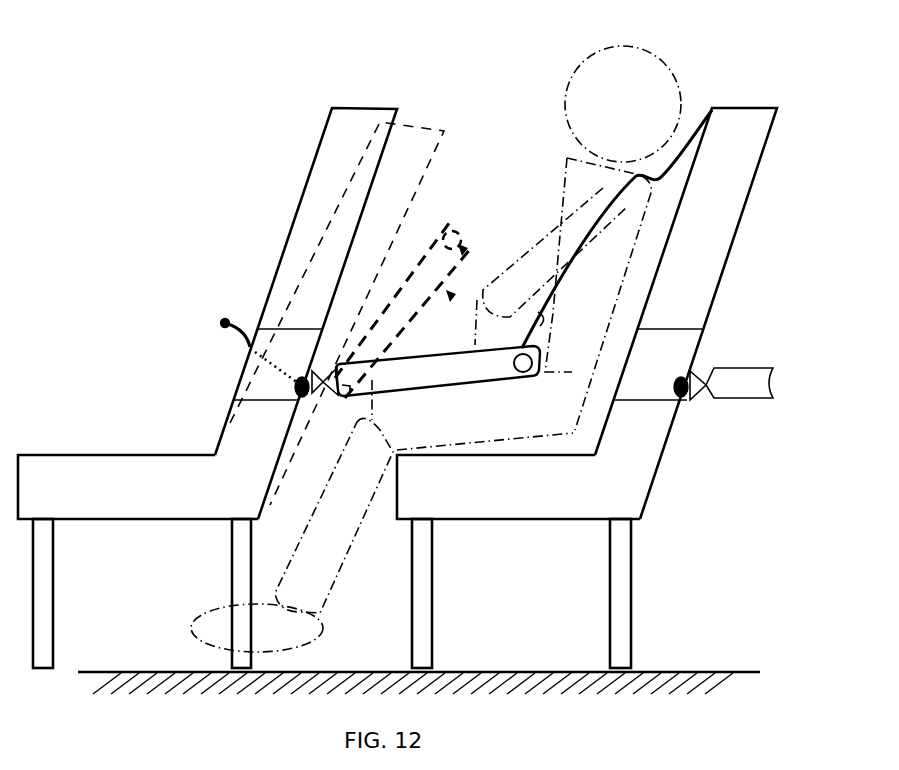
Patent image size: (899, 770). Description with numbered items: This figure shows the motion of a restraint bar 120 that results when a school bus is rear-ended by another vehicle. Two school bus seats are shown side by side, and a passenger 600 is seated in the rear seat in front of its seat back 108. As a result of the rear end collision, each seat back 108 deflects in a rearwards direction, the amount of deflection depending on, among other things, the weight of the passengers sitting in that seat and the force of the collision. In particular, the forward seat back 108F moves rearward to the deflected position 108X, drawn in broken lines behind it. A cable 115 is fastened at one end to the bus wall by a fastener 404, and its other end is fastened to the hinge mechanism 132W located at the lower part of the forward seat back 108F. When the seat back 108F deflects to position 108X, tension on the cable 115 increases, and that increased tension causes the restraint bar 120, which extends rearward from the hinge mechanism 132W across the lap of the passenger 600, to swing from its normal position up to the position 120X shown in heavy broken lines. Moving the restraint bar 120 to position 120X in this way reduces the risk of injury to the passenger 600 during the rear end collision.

The seat back 108F is at (320, 203).
The seat back 108 is at (703, 254).
The deflected position 108X is at (422, 125).
The position 120X is at (462, 223).
The restraint bar 120 is at (476, 367).
The hinge mechanism 132W is at (299, 394).
The fastener 404 is at (225, 320).
The cable 115 is at (241, 342).
The passenger 600 is at (686, 74).